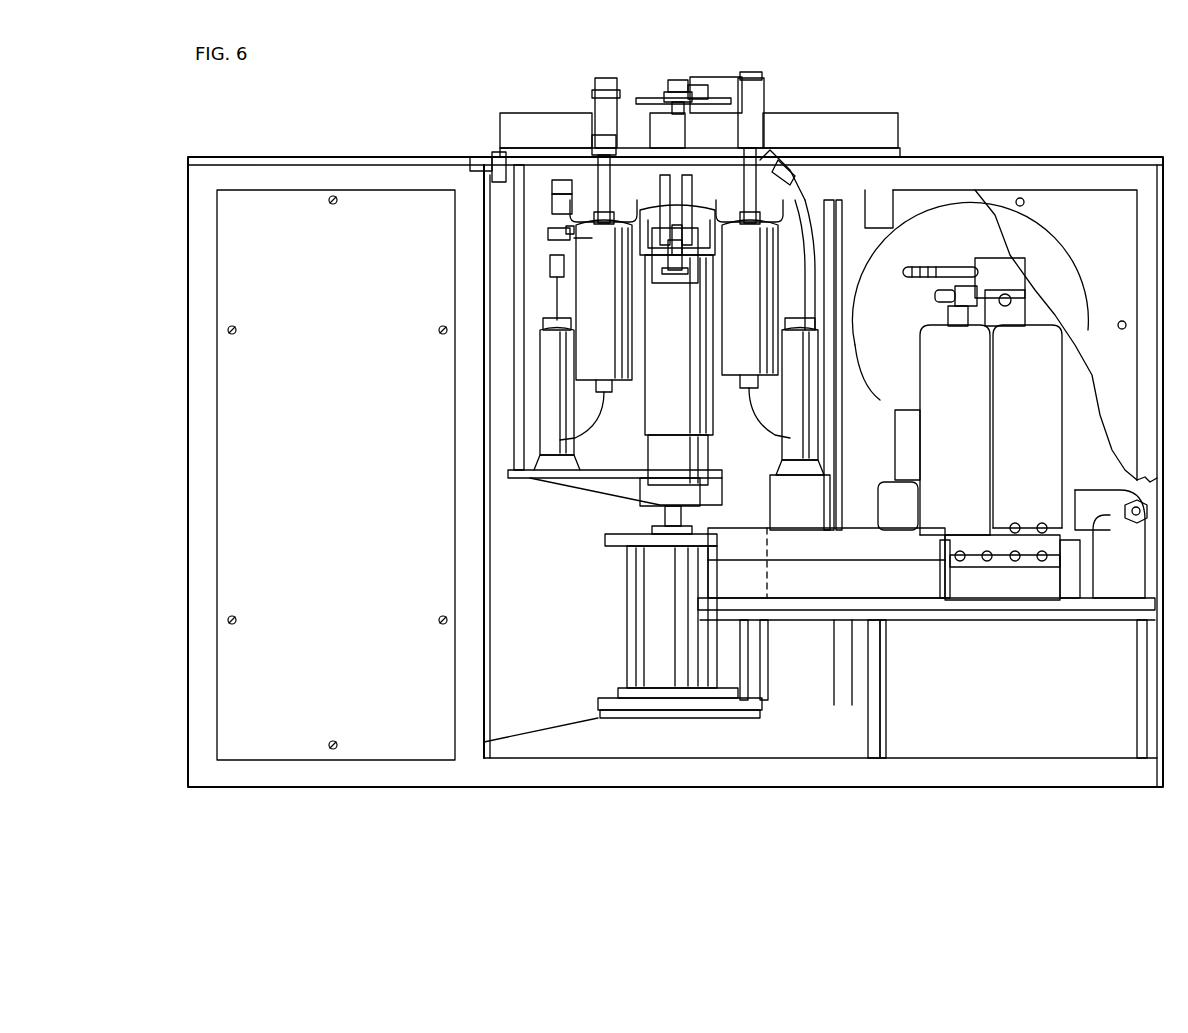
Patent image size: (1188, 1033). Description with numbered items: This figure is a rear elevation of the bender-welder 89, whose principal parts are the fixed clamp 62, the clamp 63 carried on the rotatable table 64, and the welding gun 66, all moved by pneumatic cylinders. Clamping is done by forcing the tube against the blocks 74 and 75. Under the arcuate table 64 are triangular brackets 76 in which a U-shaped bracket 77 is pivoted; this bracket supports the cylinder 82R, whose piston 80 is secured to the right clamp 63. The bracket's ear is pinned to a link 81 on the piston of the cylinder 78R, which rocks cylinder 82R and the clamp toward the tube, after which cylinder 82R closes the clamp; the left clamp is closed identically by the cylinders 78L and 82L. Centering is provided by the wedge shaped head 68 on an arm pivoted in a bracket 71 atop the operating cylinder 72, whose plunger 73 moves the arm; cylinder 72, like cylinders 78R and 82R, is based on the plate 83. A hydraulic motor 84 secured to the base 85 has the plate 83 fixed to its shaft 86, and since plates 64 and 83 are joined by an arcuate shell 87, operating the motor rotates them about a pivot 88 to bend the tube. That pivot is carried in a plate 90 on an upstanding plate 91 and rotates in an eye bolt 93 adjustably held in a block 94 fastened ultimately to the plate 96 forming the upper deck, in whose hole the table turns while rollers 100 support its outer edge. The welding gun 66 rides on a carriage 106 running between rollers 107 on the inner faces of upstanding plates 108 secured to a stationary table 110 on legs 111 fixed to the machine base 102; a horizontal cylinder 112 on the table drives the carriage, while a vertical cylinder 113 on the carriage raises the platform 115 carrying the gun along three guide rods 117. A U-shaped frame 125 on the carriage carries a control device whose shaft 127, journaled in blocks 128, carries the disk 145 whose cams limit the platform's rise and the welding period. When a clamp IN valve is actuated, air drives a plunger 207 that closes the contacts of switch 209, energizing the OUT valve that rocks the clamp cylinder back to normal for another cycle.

The fixed clamp 62 is at (762, 100).
The clamp 63 is at (595, 95).
The rotatable table 64 is at (498, 152).
The welding electrode or gun 66 is at (775, 160).
The wedge shaped head 68 is at (700, 240).
The bracket 71 is at (665, 345).
The operating cylinder 72 is at (650, 425).
The plunger 73 is at (680, 180).
The block 74 is at (850, 115).
The block 75 is at (545, 120).
The triangular brackets 76 is at (555, 188).
The U-shaped bracket 77 is at (555, 207).
The cylinder 78R is at (545, 410).
The cylinder 78L is at (790, 445).
The piston 80 is at (555, 234).
The link 81 is at (550, 265).
The cylinder 82R is at (580, 350).
The cylinder 82L is at (790, 350).
The plate 83 is at (598, 488).
The hydraulic motor 84 is at (650, 590).
The base 85 is at (555, 732).
The shaft 86 is at (662, 526).
The arcuate plate or shell 87 is at (520, 450).
The pivot 88 is at (672, 80).
The bender-welder 89 is at (180, 350).
The plate 90 is at (662, 96).
The upstanding plate 91 is at (650, 108).
The eye bolt 93 is at (708, 85).
The block 94 is at (740, 78).
The plate 96 is at (325, 157).
The rollers 100 is at (490, 160).
The base 102 is at (995, 755).
The carriage or platform 106 is at (1045, 560).
The rollers 107 is at (1042, 523).
The upstanding plates 108 is at (895, 580).
The stationary table 110 is at (1040, 602).
The legs 111 is at (880, 712).
The cylinder 112 is at (1110, 490).
The cylinder 113 is at (905, 465).
The platform 115 is at (858, 290).
The guide rods 117 is at (836, 452).
The U-shaped frame 125 is at (1053, 438).
The shaft 127 is at (935, 297).
The blocks 128 is at (1022, 306).
The disk 145 is at (955, 236).
The plunger 207 is at (575, 240).
The switch 209 is at (568, 228).